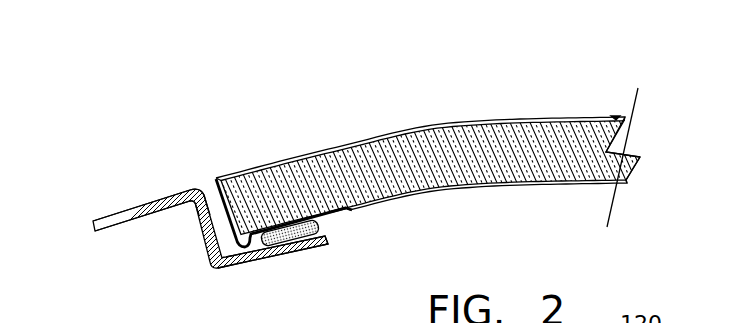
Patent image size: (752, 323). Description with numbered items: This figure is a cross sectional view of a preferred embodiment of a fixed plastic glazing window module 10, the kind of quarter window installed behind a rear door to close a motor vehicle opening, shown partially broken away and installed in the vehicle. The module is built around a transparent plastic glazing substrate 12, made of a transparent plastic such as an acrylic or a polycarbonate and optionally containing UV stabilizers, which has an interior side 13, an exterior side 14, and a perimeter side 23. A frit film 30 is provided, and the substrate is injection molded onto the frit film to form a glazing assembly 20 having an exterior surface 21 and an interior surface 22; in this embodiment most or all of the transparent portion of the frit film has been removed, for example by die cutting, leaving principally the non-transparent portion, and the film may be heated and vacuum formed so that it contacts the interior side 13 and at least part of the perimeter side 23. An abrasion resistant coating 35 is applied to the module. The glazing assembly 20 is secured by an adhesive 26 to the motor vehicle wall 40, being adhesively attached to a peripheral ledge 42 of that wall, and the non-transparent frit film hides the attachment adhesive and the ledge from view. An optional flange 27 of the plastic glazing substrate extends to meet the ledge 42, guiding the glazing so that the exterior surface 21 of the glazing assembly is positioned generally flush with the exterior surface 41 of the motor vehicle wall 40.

The plastic glazing window module 10 is at (510, 88).
The transparent plastic glazing substrate 12 is at (608, 150).
The interior side 13 is at (538, 185).
The exterior side 14 is at (372, 140).
The glazing assembly 20 is at (643, 180).
The exterior surface 21 is at (323, 151).
The interior surface 22 is at (434, 194).
The perimeter side 23 is at (226, 213).
The adhesive 26 is at (280, 241).
The flange 27 is at (214, 241).
The frit film 30 is at (321, 218).
The abrasion resistant coating 35 is at (616, 118).
The motor vehicle wall 40 is at (127, 219).
The exterior surface 41 is at (122, 208).
The peripheral ledge 42 is at (252, 263).